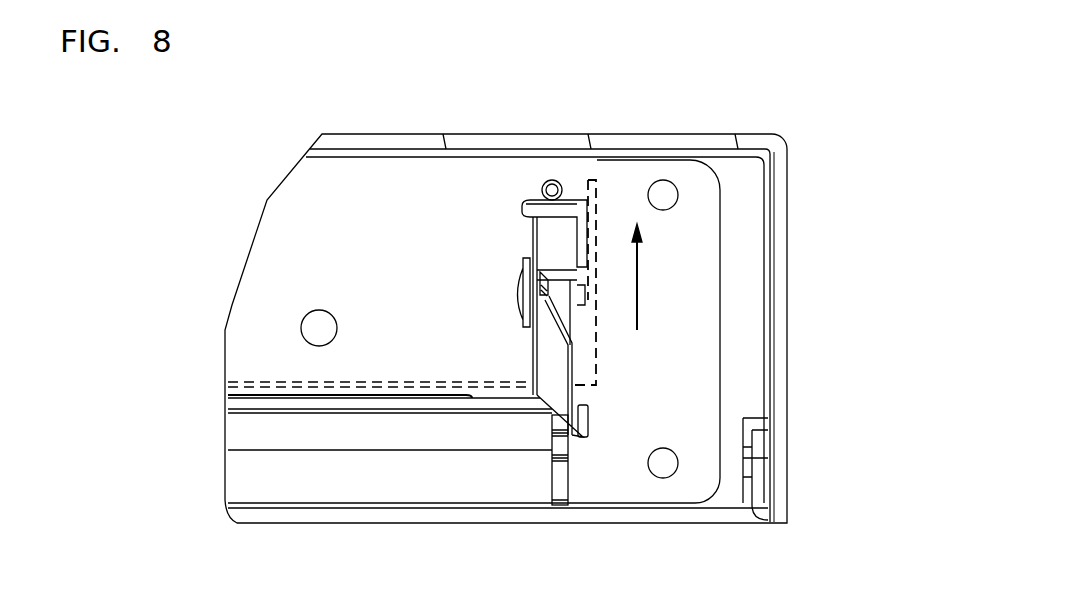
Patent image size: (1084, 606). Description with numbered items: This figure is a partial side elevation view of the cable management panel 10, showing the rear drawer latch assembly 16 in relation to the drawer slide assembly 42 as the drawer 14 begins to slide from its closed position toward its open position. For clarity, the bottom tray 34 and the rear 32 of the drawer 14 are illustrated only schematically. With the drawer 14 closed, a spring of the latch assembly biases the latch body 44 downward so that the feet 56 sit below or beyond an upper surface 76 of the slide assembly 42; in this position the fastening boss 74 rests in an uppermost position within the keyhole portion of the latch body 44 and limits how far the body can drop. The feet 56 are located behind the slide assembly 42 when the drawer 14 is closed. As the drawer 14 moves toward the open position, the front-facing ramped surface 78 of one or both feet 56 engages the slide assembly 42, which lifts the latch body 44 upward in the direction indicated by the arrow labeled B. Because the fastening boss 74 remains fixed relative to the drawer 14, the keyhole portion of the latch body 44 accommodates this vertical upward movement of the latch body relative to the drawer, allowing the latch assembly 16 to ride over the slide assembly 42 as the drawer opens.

The cable management panel 10 is at (790, 113).
The drawer 14 is at (288, 382).
The rear drawer latch assembly 16 is at (508, 226).
The rear 32 is at (596, 206).
The bottom tray 34 is at (432, 380).
The drawer slide assembly 42 is at (245, 417).
The latch body 44 is at (550, 350).
The feet 56 is at (586, 420).
The fastening boss 74 is at (537, 285).
The upper surface 76 is at (341, 395).
The ramped surface 78 is at (552, 408).